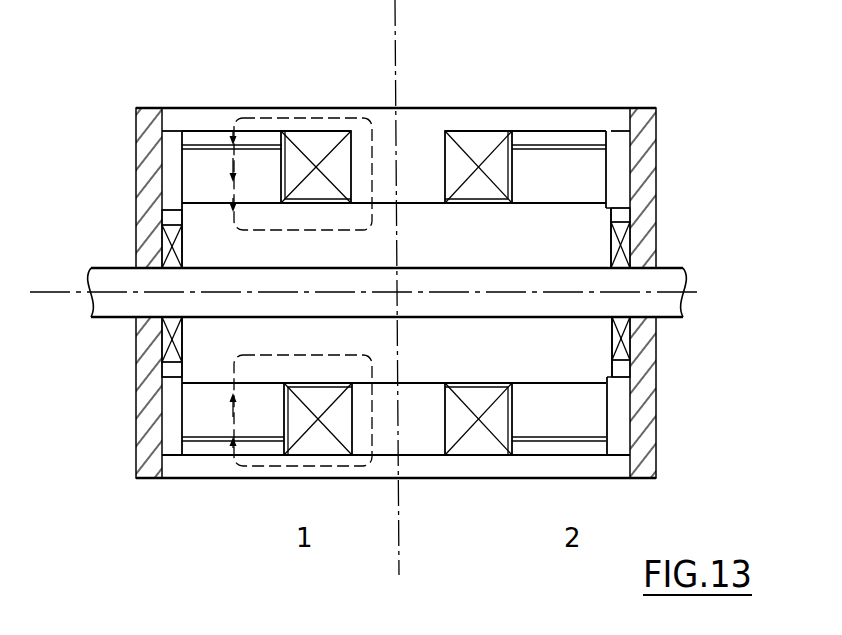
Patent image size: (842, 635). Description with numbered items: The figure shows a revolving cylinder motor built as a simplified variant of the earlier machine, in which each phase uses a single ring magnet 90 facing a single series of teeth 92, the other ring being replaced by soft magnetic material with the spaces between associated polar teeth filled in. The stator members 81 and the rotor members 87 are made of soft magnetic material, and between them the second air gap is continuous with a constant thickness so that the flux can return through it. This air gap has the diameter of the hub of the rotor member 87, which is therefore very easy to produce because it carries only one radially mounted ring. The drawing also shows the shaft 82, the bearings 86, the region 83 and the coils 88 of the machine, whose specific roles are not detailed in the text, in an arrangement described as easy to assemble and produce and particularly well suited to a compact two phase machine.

The stator member 81 is at (122, 111).
The shaft 82 is at (106, 265).
The stator module 83 is at (277, 103).
The bearing 86 is at (162, 343).
The rotor member 87 is at (305, 258).
The coil 88 is at (320, 145).
The ring magnet 90 is at (205, 140).
The series of teeth 92 is at (178, 182).